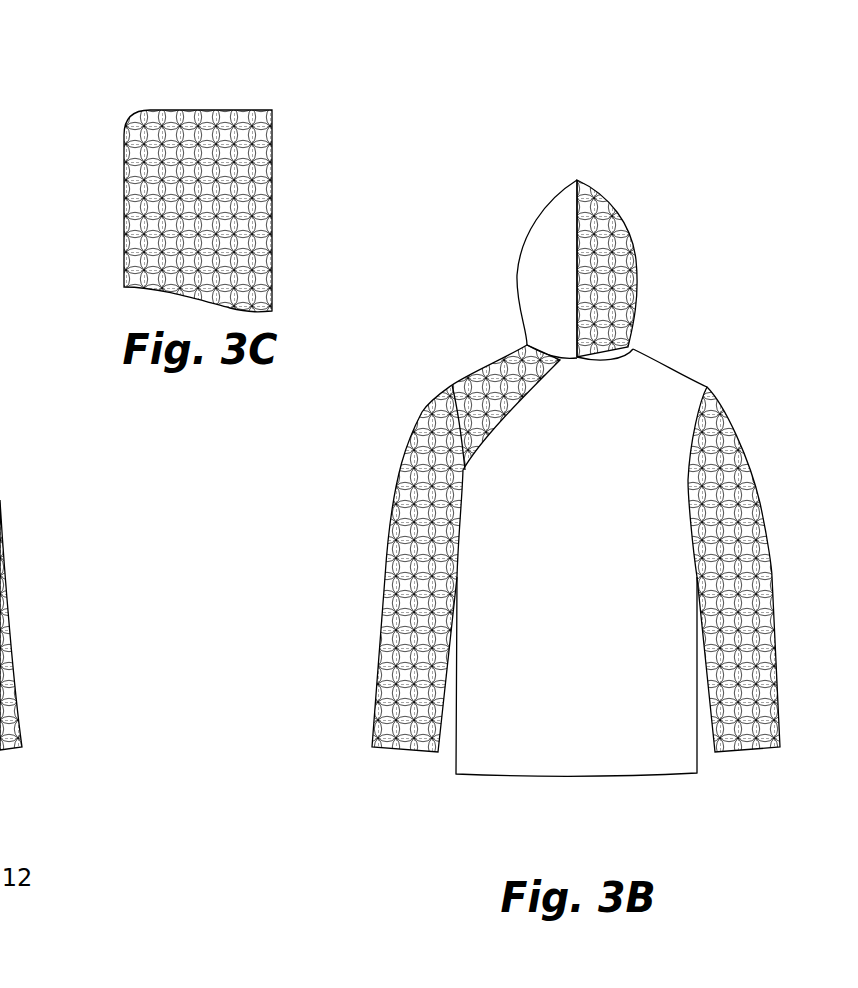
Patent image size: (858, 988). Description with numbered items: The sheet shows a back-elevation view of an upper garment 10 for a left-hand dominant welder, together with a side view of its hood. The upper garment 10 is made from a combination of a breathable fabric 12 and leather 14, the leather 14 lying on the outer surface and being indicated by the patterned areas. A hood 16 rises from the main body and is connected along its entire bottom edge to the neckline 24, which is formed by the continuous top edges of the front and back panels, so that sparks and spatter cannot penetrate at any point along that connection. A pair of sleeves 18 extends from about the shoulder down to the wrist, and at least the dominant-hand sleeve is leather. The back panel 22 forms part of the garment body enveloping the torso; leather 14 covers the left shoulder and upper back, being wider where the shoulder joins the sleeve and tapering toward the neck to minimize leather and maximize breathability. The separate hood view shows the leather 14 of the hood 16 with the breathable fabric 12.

In FIG. 3B, the upper garment 10 is at (713, 324).
In FIG. 3B, the breathable fabric 12 is at (633, 748).
In FIG. 3C, the leather 14 is at (203, 135).
In FIG. 3B, the leather 14 is at (625, 252).
In FIG. 3C, the hood 16 is at (104, 105).
In FIG. 3B, the hood 16 is at (607, 215).
In FIG. 3B, the sleeves 18 is at (576, 548).
In FIG. 3B, the back panel 22 is at (580, 620).
In FIG. 3B, the neckline 24 is at (640, 345).